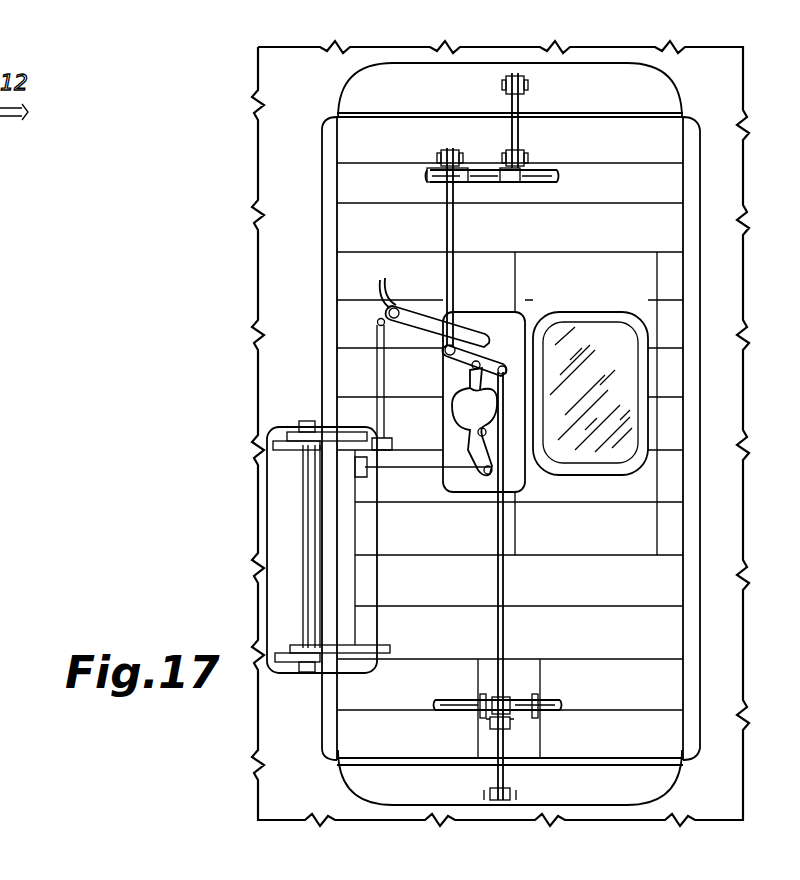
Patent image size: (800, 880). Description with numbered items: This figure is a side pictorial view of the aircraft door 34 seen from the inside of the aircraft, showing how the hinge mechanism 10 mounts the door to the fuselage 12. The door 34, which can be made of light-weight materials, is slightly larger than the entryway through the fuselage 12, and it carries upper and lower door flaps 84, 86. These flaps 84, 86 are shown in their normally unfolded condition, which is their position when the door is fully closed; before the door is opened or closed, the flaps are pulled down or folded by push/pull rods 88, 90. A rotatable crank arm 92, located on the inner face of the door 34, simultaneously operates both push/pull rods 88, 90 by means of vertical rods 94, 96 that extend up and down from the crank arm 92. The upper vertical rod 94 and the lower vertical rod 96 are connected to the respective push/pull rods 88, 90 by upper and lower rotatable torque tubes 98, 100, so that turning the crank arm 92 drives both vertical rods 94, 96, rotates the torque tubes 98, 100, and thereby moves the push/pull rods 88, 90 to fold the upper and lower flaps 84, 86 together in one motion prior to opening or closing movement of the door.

The door assembly 10 is at (465, 436).
The fuselage 12 is at (258, 198).
The door 34 is at (672, 188).
The upper door flap 84 is at (652, 92).
The lower door flap 86 is at (380, 778).
The push/pull rod 88 is at (520, 135).
The push/pull rod 90 is at (504, 748).
The rotatable crank arm 92 is at (495, 365).
The vertical rod 94 is at (455, 240).
The vertical rod 96 is at (504, 637).
The upper rotatable torque tube 98 is at (480, 170).
The lower rotatable torque tube 100 is at (540, 696).